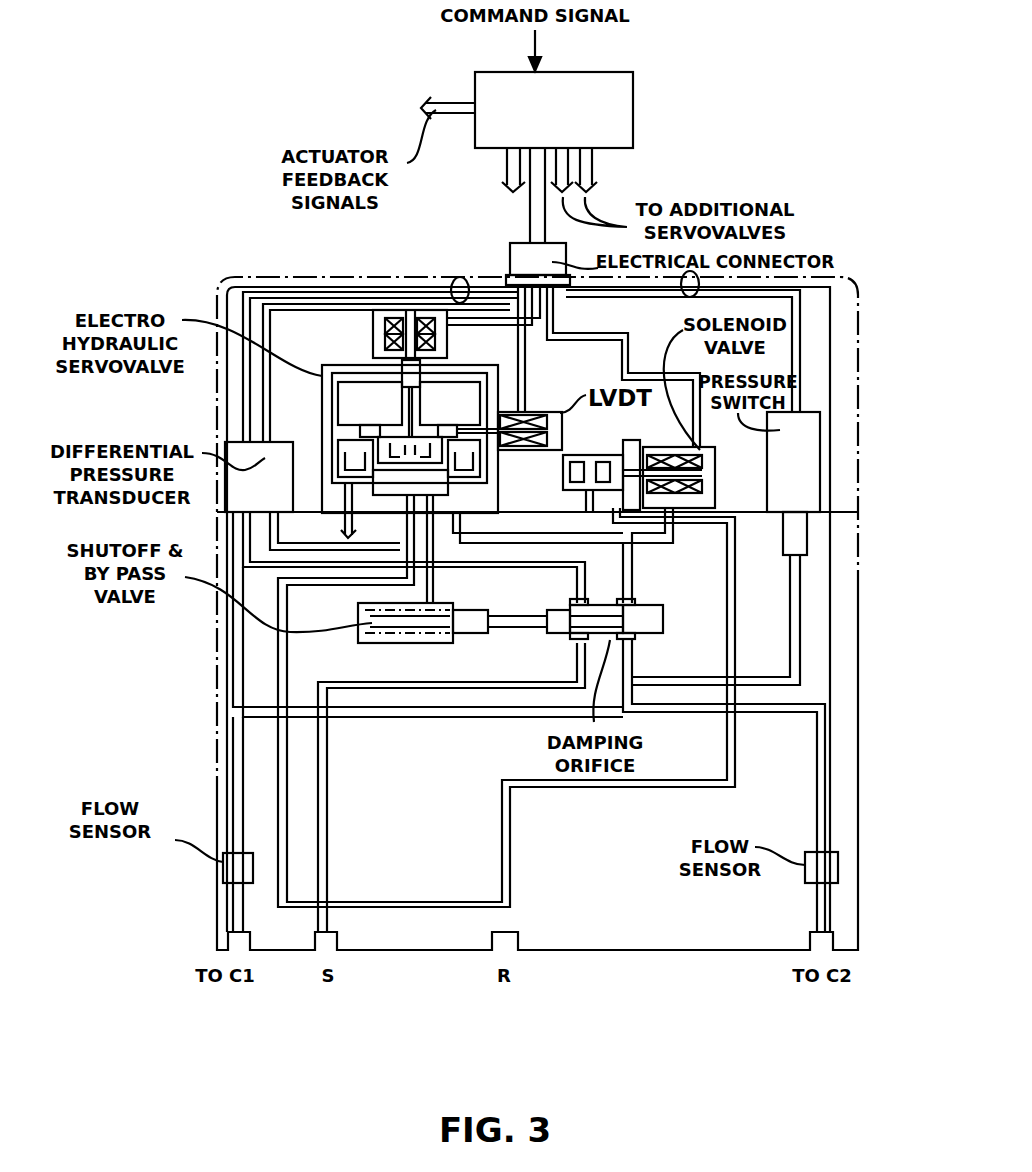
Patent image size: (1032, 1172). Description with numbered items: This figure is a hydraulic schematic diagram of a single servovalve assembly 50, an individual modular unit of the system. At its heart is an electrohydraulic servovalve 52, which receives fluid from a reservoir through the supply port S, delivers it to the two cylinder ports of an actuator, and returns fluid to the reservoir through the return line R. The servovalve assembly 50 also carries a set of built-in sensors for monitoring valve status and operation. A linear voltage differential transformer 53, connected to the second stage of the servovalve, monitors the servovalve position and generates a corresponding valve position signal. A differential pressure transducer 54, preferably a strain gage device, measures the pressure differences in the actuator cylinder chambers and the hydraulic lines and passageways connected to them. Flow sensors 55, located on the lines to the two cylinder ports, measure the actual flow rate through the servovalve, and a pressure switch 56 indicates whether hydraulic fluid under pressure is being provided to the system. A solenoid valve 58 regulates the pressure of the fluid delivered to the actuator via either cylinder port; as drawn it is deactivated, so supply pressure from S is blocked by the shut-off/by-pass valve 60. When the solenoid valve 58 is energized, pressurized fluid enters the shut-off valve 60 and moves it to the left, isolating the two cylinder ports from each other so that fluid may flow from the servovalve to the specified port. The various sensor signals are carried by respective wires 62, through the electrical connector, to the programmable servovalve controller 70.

The servovalve assembly 50 is at (340, 277).
The electrohydraulic servovalve 52 is at (347, 366).
The linear voltage differential transformer (LVDT) 53 is at (562, 432).
The differential pressure transducer 54 is at (259, 477).
The flow sensor 55 is at (223, 868).
The pressure switch 56 is at (726, 548).
The solenoid valve 58 is at (716, 470).
The shut-off/by-pass valve 60 is at (422, 643).
The wires 62 is at (458, 280).
The programmable servovalve controller 70 is at (633, 110).